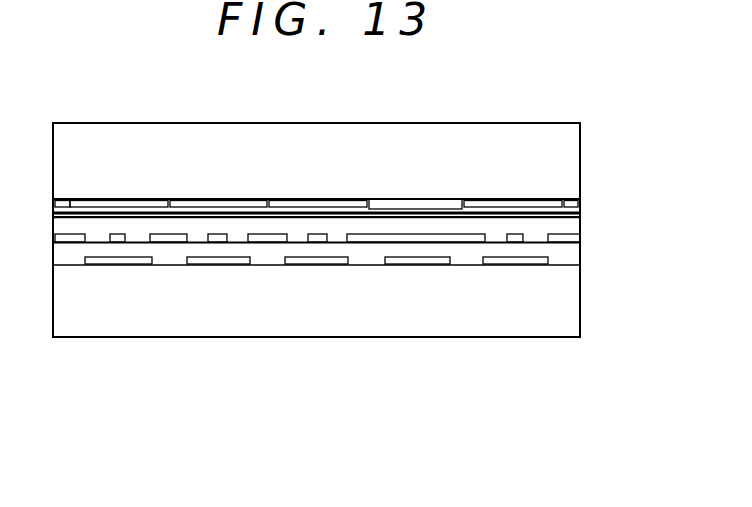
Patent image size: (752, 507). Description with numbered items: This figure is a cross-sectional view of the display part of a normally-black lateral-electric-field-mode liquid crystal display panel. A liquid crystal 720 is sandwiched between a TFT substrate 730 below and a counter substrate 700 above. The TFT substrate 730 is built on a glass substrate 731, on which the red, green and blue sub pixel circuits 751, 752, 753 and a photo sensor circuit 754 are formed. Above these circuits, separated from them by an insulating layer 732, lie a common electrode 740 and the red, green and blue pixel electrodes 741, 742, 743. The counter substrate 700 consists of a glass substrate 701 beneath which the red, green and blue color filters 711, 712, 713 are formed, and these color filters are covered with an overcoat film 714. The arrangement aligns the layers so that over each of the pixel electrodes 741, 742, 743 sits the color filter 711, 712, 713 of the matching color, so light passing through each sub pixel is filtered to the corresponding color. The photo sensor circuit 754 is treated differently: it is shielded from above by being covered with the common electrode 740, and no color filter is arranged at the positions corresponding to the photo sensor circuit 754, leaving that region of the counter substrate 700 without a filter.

The counter substrate 700 is at (588, 118).
The glass substrate 701 is at (552, 145).
The color filter 711 is at (105, 205).
The color filter 712 is at (205, 203).
The color filter 713 is at (313, 203).
The overcoat film 714 is at (415, 207).
The liquid crystal 720 is at (563, 227).
The TFT substrate 730 is at (588, 233).
The glass substrate 731 is at (480, 310).
The insulating layer 732 is at (562, 255).
The common electrode 740 is at (62, 243).
The pixel electrode 741 is at (118, 243).
The pixel electrode 742 is at (222, 243).
The pixel electrode 743 is at (318, 243).
The sub pixel circuit 751 is at (102, 265).
The sub pixel circuit 752 is at (207, 265).
The sub pixel circuit 753 is at (307, 265).
The photo sensor circuit 754 is at (425, 262).